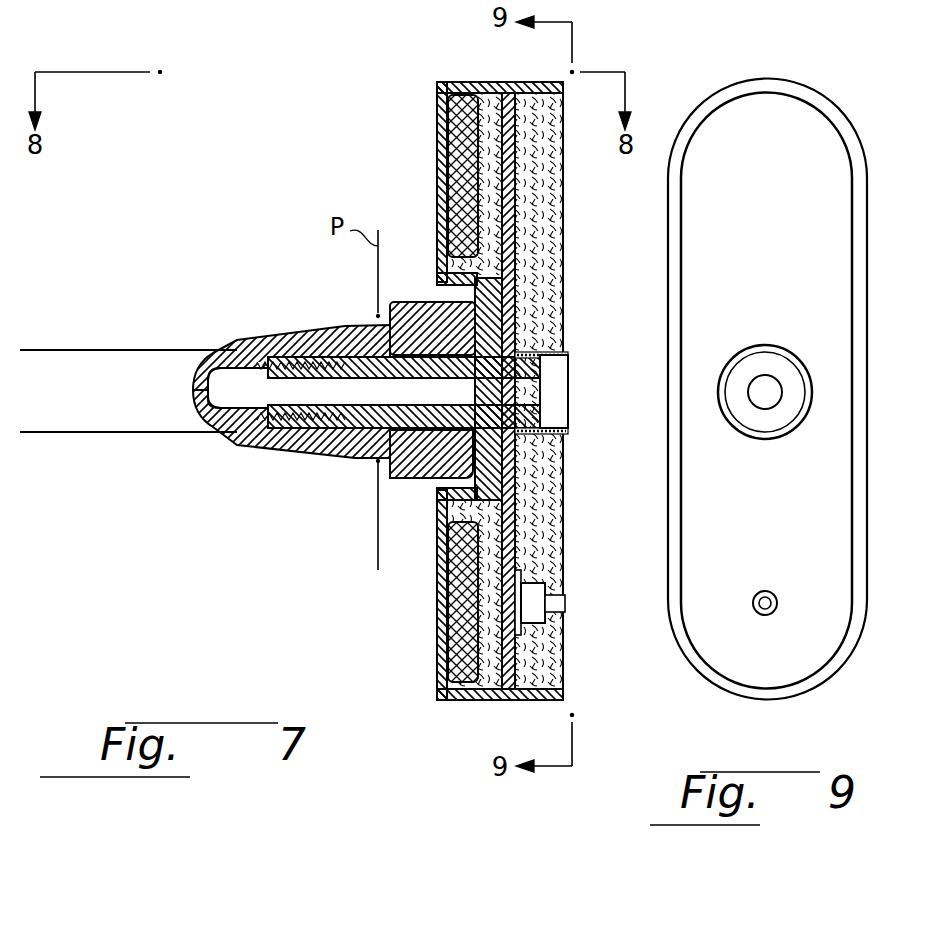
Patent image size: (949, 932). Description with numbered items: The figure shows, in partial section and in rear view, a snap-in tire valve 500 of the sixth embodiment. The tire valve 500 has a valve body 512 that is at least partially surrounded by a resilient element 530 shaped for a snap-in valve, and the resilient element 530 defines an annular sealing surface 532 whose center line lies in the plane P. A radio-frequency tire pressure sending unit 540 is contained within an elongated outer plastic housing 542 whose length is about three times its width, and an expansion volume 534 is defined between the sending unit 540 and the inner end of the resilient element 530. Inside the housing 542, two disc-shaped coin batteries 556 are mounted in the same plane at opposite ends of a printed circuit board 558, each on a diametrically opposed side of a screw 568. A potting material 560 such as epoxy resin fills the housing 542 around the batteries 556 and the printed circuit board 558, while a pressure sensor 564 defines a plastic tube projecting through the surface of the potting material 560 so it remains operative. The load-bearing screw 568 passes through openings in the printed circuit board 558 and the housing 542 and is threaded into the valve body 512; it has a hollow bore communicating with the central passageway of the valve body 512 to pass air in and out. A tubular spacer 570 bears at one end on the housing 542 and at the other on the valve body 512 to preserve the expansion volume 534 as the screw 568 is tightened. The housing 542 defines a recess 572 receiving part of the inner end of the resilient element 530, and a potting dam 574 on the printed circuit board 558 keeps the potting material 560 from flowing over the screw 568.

In FIG. 7, the tire valve 500 is at (250, 297).
In FIG. 7, the valve body 512 is at (233, 348).
In FIG. 7, the resilient element 530 is at (350, 470).
In FIG. 7, the annular sealing surface 532 is at (287, 374).
In FIG. 7, the expansion volume 534 is at (445, 301).
In FIG. 7, the radio-frequency tire pressure sending unit 540 is at (493, 410).
In FIG. 9, the radio-frequency tire pressure sending unit 540 is at (838, 88).
In FIG. 7, the outer plastic housing 542 is at (438, 127).
In FIG. 9, the outer plastic housing 542 is at (669, 519).
In FIG. 7, the batteries 556 is at (463, 88).
In FIG. 7, the printed circuit board 558 is at (505, 568).
In FIG. 7, the potting material 560 is at (548, 464).
In FIG. 9, the potting material 560 is at (681, 279).
In FIG. 7, the pressure sensor 564 is at (566, 604).
In FIG. 9, the pressure sensor 564 is at (775, 612).
In FIG. 7, the screw 568 is at (347, 460).
In FIG. 7, the tubular spacer 570 is at (373, 452).
In FIG. 7, the recess 572 is at (433, 497).
In FIG. 7, the potting dam 574 is at (545, 352).
In FIG. 9, the potting dam 574 is at (732, 360).